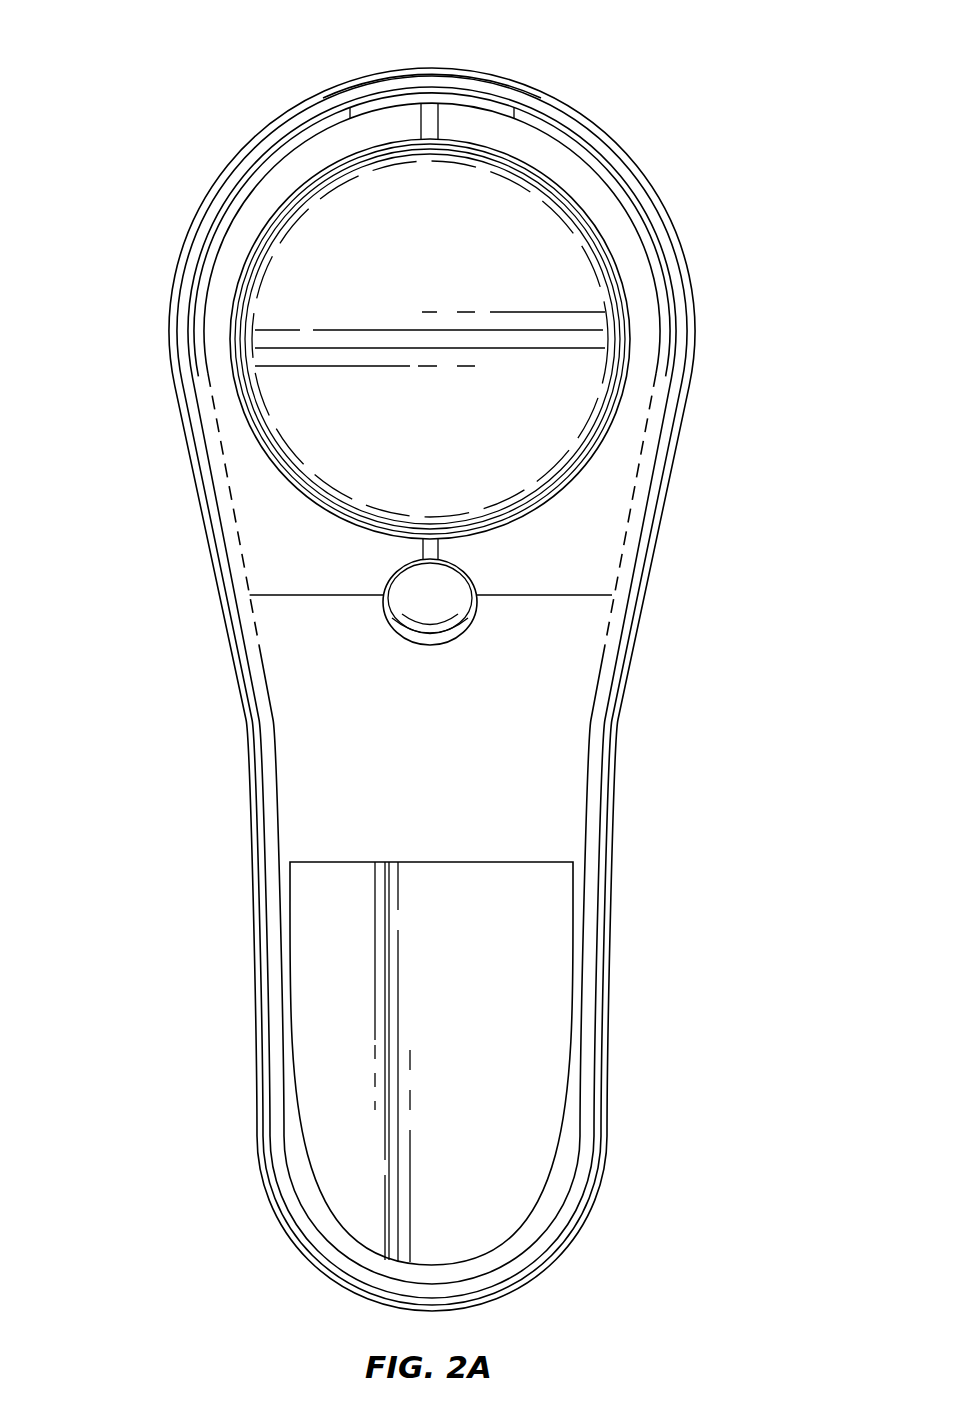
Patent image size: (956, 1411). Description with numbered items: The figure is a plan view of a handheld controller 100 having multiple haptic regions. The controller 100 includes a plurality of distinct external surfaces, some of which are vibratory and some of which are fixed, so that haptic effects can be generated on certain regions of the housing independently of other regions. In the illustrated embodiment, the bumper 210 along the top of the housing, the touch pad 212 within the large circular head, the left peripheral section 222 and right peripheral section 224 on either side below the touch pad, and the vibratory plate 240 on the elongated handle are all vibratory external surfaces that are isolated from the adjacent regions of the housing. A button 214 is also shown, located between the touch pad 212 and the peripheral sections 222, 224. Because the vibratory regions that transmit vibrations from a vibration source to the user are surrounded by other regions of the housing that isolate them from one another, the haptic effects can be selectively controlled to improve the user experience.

The handheld controller 100 is at (163, 100).
The bumper 210 is at (453, 68).
The touch pad 212 is at (456, 241).
The button 214 is at (431, 647).
The left peripheral section 222 is at (328, 564).
The right peripheral section 224 is at (562, 564).
The vibratory plate 240 is at (466, 1017).